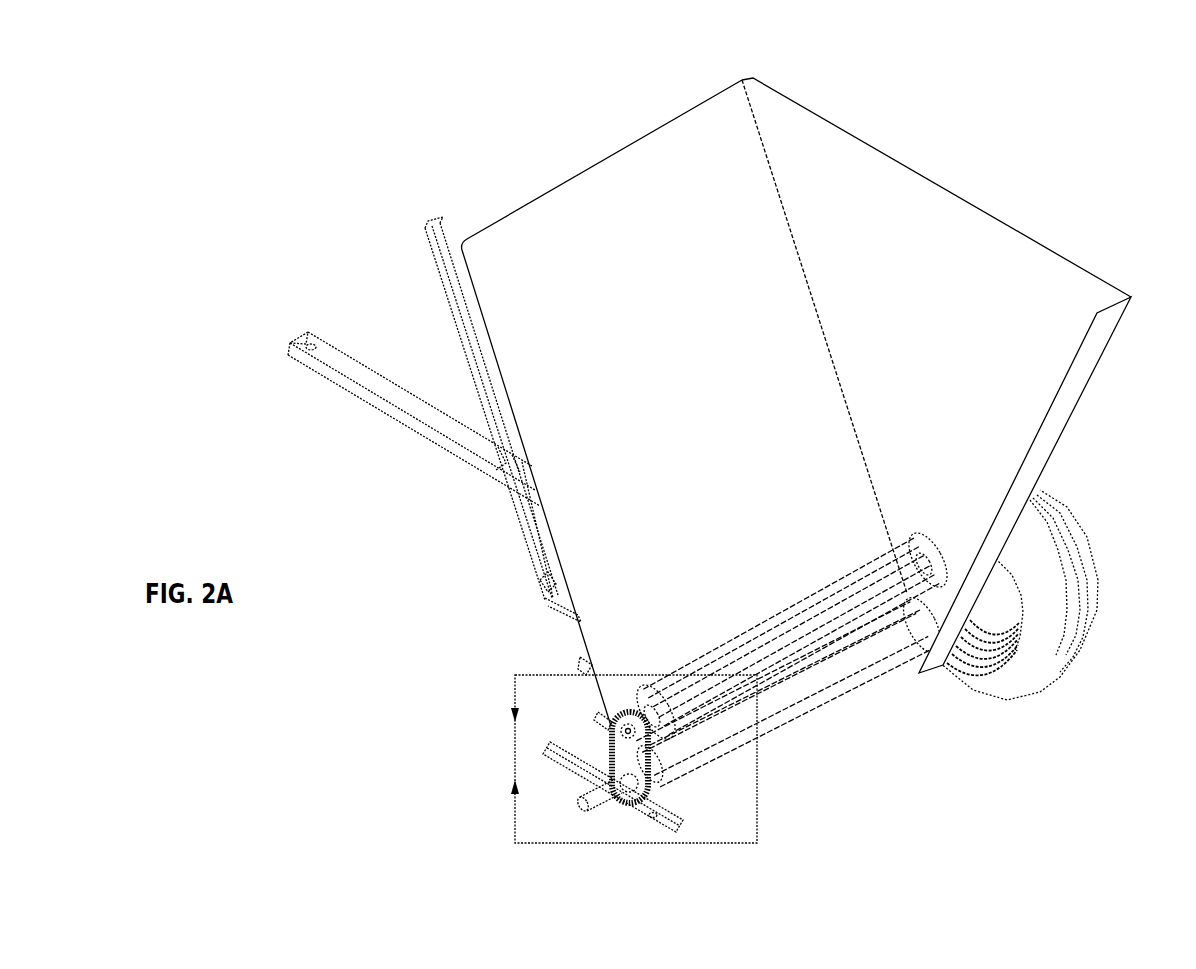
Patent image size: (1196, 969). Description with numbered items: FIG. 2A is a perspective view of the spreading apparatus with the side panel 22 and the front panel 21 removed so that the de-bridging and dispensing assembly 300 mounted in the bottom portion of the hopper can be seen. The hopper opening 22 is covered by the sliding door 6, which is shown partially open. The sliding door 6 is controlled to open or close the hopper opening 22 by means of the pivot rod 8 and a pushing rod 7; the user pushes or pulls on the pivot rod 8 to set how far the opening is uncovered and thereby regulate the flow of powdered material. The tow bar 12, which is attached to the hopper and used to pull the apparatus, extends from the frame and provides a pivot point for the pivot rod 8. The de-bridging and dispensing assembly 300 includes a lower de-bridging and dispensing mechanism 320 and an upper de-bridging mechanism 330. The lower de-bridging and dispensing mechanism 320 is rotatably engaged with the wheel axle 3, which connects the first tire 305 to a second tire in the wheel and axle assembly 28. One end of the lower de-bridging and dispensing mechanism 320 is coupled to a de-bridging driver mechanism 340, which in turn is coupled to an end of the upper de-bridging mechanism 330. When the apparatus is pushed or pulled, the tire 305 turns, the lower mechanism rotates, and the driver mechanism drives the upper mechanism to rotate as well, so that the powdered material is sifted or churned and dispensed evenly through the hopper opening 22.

The front panel 21 is at (560, 185).
The side panel 22 is at (903, 165).
The pivot rod 8 is at (433, 258).
The tow bar 12 is at (348, 352).
The pushing rod 7 is at (538, 602).
The wheel and axle assembly 28 is at (1072, 521).
The first tire 305 is at (1023, 650).
The upper de-bridging mechanism 330 is at (776, 617).
The lower de-bridging and dispensing mechanism 320 is at (781, 724).
The de-bridging driver mechanism 340 is at (598, 716).
The sliding door 6 is at (597, 749).
The wheel axle 3 is at (578, 803).
The de-bridging and dispensing assembly 300 is at (942, 789).